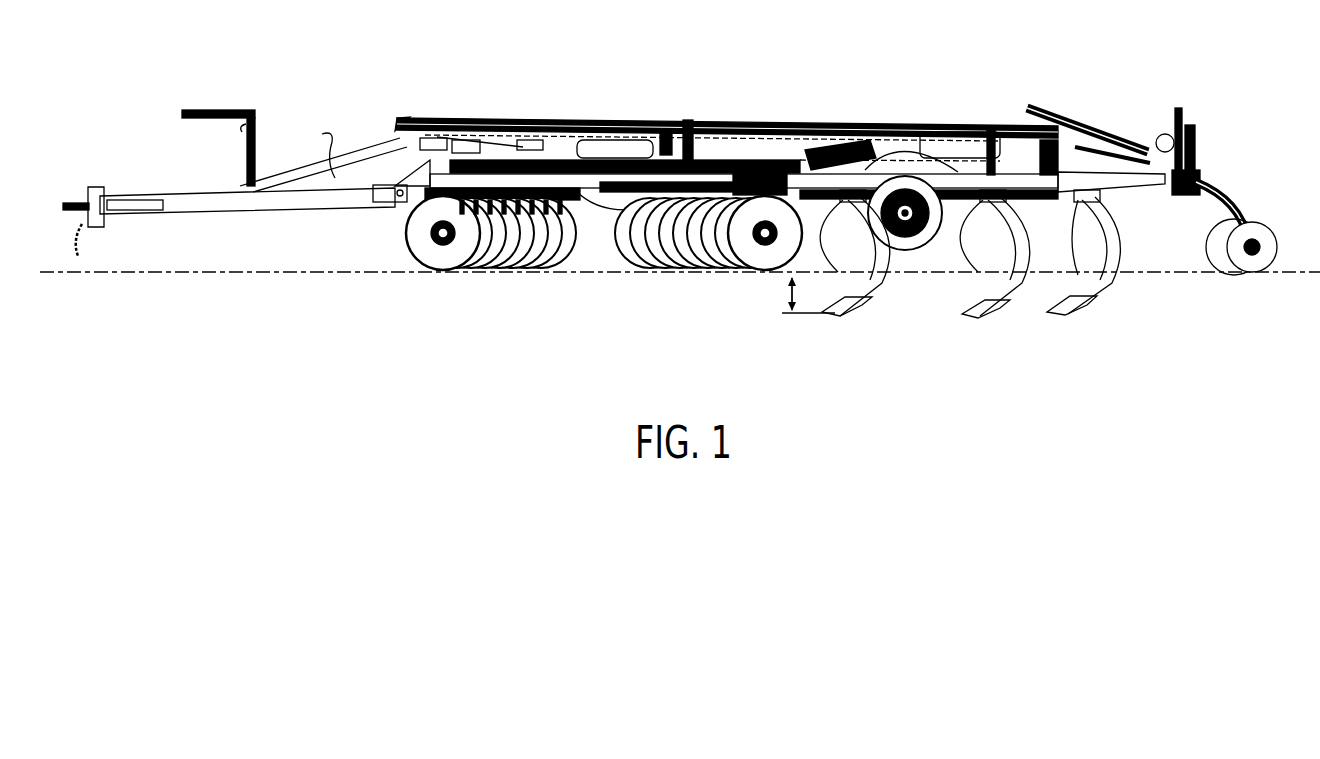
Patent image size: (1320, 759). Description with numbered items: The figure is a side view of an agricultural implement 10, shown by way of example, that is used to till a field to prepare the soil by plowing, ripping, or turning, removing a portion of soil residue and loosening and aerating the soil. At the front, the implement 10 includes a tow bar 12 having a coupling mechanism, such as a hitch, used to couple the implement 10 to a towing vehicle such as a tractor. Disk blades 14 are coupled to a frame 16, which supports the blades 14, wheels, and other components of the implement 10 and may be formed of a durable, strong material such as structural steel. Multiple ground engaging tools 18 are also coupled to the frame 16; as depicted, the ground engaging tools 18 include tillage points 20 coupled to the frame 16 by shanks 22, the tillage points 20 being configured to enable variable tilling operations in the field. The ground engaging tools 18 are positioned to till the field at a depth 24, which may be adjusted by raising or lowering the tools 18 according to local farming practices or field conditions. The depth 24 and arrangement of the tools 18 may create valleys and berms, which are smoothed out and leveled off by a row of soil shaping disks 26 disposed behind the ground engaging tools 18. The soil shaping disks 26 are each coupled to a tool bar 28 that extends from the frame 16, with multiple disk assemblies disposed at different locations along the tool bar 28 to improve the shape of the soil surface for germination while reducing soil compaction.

The agricultural implement 10 is at (426, 80).
The tow bar 12 is at (285, 206).
The disk blades 14 is at (496, 293).
The frame 16 is at (930, 182).
The ground engaging tools 18 is at (968, 322).
The tillage points 20 is at (840, 316).
The shanks 22 is at (887, 292).
The depth 24 is at (790, 297).
The soil shaping disks 26 is at (1283, 290).
The tool bar 28 is at (1167, 190).